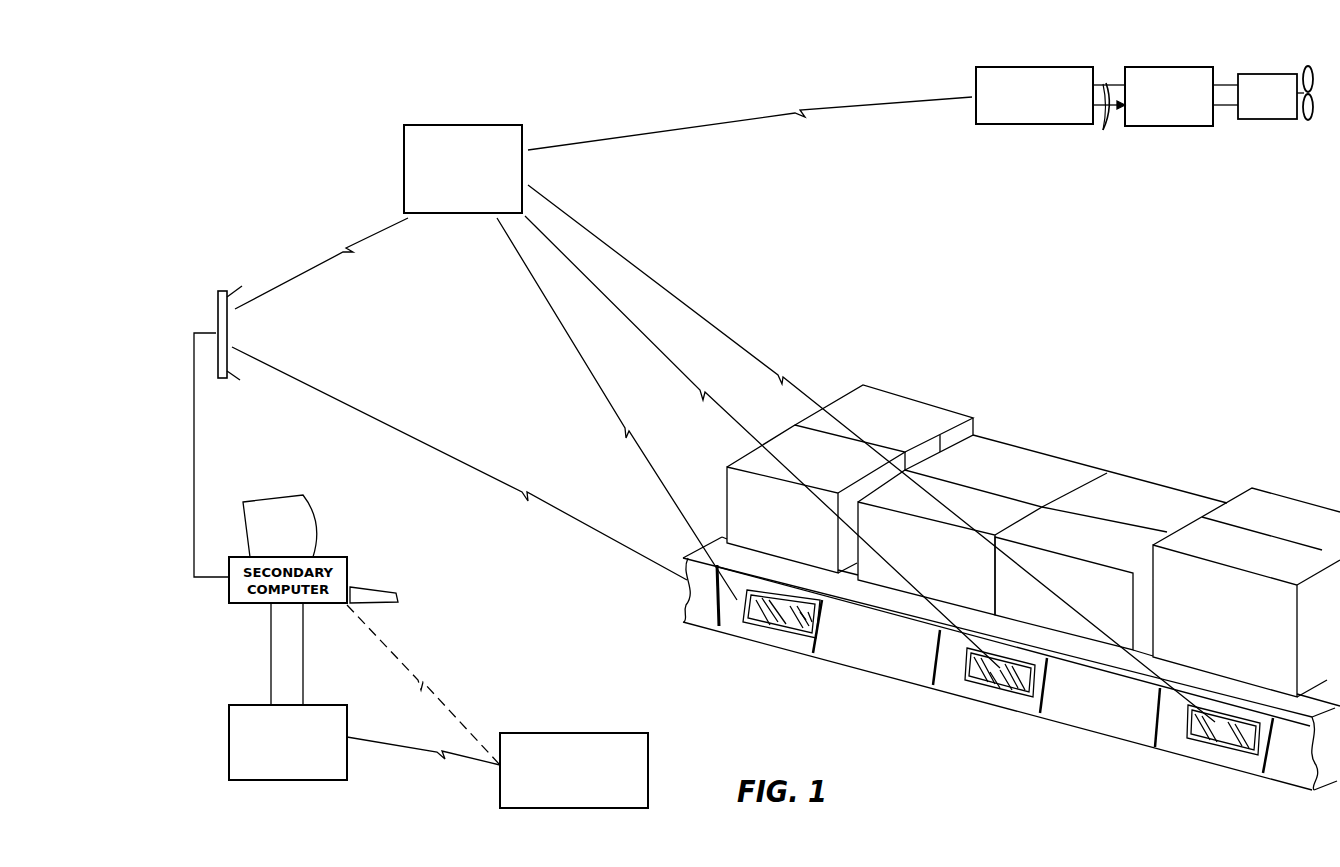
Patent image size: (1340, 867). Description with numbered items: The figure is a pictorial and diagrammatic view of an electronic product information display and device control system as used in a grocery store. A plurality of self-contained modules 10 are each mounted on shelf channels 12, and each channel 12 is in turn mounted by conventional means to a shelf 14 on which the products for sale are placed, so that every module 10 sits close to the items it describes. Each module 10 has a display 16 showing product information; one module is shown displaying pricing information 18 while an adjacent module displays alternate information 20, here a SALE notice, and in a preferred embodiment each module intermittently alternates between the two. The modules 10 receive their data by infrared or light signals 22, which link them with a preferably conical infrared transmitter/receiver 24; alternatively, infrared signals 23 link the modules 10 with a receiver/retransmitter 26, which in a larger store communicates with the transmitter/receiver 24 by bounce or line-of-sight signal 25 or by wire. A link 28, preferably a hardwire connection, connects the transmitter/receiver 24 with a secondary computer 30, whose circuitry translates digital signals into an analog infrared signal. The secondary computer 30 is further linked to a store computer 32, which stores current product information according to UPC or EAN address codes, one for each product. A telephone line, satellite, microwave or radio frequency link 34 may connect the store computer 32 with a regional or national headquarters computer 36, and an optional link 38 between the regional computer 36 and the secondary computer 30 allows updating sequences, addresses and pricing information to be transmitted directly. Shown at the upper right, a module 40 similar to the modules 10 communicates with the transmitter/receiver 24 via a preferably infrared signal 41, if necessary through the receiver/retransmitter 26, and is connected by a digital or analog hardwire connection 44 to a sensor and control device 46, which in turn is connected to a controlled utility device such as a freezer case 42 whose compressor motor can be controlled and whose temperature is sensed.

The module 10 is at (748, 640).
The shelf channel 12 is at (683, 620).
The shelf 14 is at (714, 538).
The display 16 is at (799, 638).
The pricing information 18 is at (805, 621).
The alternate information 20 is at (1008, 682).
The infrared or light signals 22 is at (466, 460).
The infrared signals 23 is at (688, 287).
The infrared transmitter/receiver 24 is at (215, 315).
The signal 25 is at (298, 275).
The receiver/retransmitter 26 is at (404, 180).
The link 28 is at (194, 478).
The secondary computer 30 is at (318, 516).
The store computer 32 is at (229, 755).
The link 34 is at (418, 752).
The regional or national headquarters computer 36 is at (648, 768).
The link 38 is at (412, 665).
The module 40 is at (976, 80).
The infrared signal 41 is at (820, 118).
The freezer case 42 is at (1253, 120).
The hardwire connection 44 is at (1107, 120).
The sensor and control device 46 is at (1163, 126).